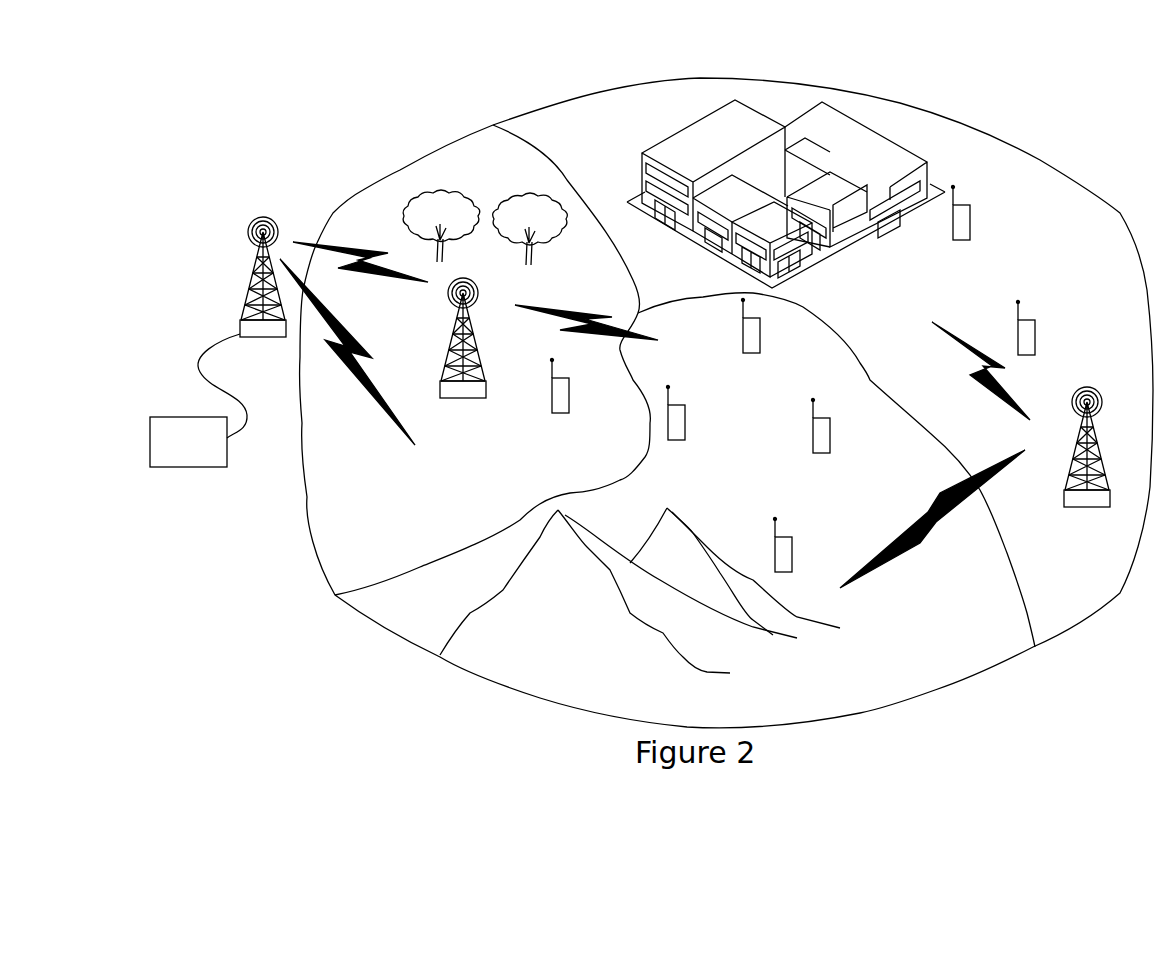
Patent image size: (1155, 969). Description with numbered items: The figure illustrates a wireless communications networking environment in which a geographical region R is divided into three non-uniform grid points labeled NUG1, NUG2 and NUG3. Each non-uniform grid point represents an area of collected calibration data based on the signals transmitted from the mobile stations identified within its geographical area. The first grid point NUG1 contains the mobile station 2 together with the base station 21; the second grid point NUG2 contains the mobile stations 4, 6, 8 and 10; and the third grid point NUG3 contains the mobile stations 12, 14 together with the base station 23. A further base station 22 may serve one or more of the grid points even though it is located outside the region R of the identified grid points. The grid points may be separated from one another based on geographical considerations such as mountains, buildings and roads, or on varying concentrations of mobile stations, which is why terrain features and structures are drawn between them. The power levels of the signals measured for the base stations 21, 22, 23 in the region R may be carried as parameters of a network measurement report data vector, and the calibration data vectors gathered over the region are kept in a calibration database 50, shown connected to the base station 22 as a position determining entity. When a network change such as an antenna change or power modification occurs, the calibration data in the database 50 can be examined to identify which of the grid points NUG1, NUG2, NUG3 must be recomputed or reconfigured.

The mobile station 2 is at (573, 403).
The mobile station 4 is at (765, 341).
The mobile station 6 is at (685, 432).
The mobile station 8 is at (794, 563).
The mobile station 10 is at (841, 442).
The mobile station 12 is at (980, 231).
The mobile station 14 is at (1049, 328).
The base station 21 is at (463, 352).
The base station 22 is at (263, 289).
The base station 23 is at (1087, 461).
The calibration database 50 is at (198, 413).
The geographical region R is at (513, 98).
The non-uniform grid point NUG1 is at (335, 542).
The non-uniform grid point NUG2 is at (933, 672).
The non-uniform grid point NUG3 is at (1035, 178).